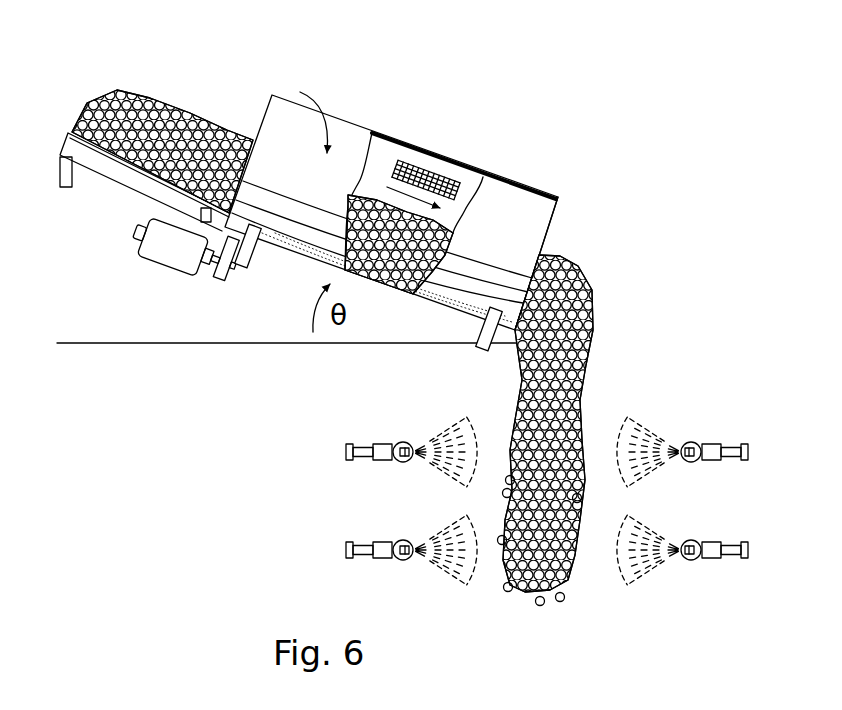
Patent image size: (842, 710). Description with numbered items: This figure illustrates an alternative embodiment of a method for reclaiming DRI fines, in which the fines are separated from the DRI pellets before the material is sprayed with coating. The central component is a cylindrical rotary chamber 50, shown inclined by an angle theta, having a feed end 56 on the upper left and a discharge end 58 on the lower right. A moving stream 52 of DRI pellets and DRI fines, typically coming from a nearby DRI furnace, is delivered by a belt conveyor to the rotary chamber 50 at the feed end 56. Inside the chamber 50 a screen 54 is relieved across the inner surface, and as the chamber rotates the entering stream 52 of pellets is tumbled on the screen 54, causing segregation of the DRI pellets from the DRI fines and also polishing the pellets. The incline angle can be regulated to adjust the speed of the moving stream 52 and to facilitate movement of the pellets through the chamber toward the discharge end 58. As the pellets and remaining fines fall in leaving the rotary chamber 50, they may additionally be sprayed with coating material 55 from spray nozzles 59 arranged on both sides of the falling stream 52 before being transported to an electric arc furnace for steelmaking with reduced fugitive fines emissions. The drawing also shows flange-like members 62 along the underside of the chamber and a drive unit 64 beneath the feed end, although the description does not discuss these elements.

The rotary chamber 50 is at (423, 85).
The moving stream of DRI pellets 52 is at (104, 91).
The screen 54 is at (438, 170).
The coating material 55 is at (647, 567).
The feed end 56 is at (262, 117).
The discharge end 58 is at (553, 218).
The spray nozzles 59 is at (695, 540).
The support flange 62 is at (253, 257).
The drive motor 64 is at (167, 240).